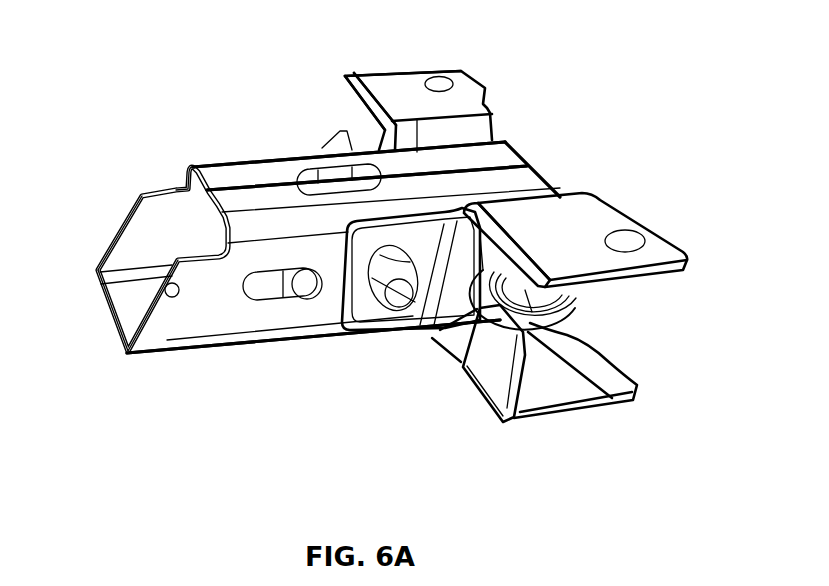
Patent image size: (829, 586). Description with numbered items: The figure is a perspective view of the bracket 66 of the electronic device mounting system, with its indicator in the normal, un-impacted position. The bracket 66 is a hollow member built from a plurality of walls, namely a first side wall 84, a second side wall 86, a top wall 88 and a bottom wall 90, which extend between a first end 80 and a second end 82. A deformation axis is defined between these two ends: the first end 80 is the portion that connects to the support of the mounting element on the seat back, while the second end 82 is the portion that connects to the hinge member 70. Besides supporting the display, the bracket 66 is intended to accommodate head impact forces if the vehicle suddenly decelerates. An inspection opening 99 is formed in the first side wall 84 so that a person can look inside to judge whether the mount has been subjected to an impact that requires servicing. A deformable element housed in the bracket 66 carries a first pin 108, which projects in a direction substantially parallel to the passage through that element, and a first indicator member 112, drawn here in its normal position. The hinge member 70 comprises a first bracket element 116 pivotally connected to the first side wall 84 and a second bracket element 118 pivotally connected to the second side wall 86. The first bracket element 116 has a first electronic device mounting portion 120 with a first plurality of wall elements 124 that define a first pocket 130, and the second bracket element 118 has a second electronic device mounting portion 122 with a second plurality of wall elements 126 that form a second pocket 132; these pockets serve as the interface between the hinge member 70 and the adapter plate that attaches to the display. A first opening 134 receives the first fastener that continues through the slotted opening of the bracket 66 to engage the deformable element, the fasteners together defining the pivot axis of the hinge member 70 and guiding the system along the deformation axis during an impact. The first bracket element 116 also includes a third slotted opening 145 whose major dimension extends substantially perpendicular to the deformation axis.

The bracket 66 is at (243, 364).
The hinge member 70 is at (522, 357).
The first end 80 is at (140, 297).
The second end 82 is at (506, 147).
The first side wall 84 is at (167, 333).
The second side wall 86 is at (205, 166).
The top wall 88 is at (413, 160).
The bottom wall 90 is at (110, 340).
The inspection opening 99 is at (283, 292).
The first pin 108 is at (405, 298).
The first indicator member 112 is at (305, 288).
The first bracket element 116 is at (508, 430).
The second bracket element 118 is at (431, 82).
The first electronic device mounting portion 120 is at (608, 221).
The second electronic device mounting portion 122 is at (385, 85).
The first plurality of wall elements 124 is at (613, 380).
The second plurality of wall elements 126 is at (362, 82).
The first pocket 130 is at (620, 306).
The second pocket 132 is at (343, 121).
The first opening 134 is at (525, 290).
The third slotted opening 145 is at (447, 213).